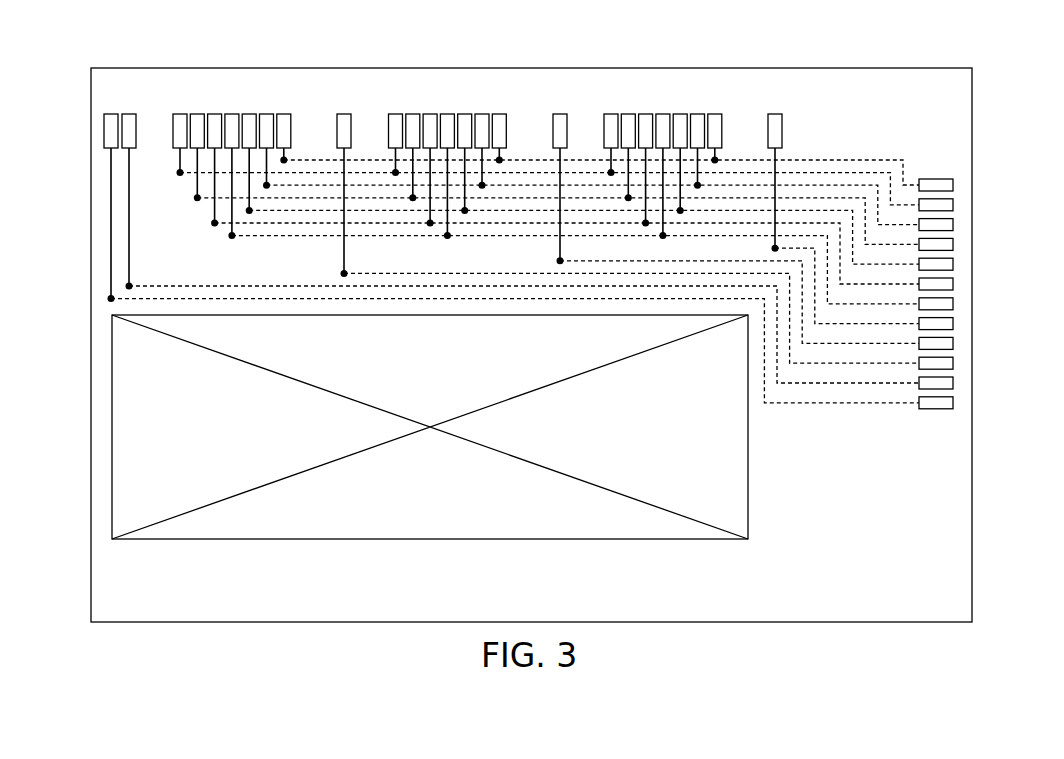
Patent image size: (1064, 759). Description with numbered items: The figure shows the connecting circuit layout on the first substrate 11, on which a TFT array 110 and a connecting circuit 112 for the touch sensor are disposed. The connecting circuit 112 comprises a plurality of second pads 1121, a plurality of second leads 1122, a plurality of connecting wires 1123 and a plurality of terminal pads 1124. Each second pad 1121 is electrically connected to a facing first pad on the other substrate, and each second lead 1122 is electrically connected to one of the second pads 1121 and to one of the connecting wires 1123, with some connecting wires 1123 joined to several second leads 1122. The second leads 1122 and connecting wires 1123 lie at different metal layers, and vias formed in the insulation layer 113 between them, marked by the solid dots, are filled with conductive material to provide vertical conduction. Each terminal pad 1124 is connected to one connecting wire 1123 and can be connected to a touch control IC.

The first substrate 11 is at (91, 138).
The TFT array 110 is at (443, 383).
The connecting circuit 112 is at (788, 86).
The insulation layer 113 is at (152, 232).
The second pads 1121 is at (180, 113).
The second leads 1122 is at (180, 165).
The connecting wires 1123 is at (315, 159).
The terminal pads 1124 is at (953, 185).